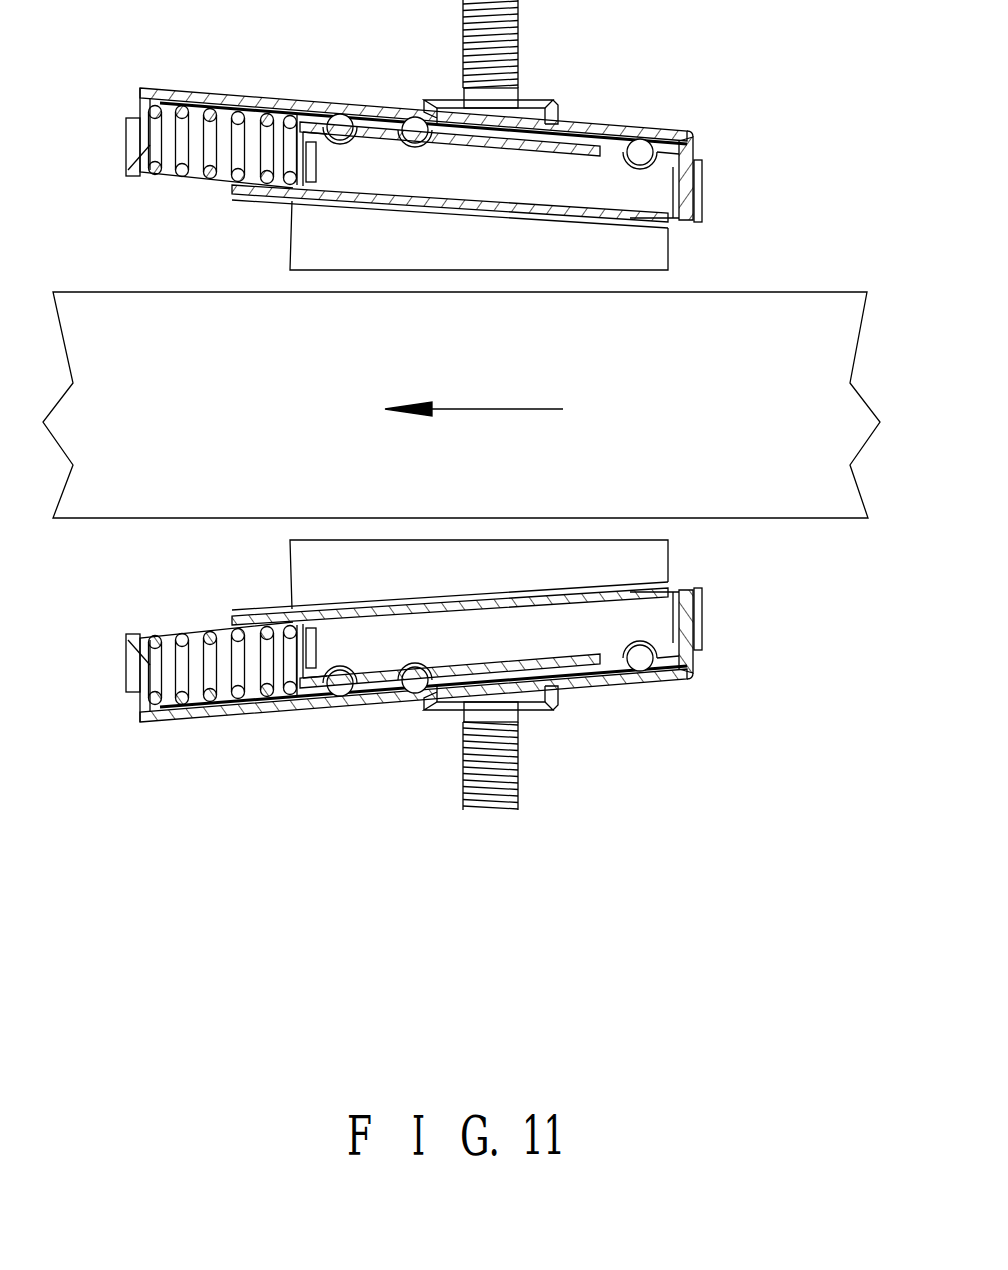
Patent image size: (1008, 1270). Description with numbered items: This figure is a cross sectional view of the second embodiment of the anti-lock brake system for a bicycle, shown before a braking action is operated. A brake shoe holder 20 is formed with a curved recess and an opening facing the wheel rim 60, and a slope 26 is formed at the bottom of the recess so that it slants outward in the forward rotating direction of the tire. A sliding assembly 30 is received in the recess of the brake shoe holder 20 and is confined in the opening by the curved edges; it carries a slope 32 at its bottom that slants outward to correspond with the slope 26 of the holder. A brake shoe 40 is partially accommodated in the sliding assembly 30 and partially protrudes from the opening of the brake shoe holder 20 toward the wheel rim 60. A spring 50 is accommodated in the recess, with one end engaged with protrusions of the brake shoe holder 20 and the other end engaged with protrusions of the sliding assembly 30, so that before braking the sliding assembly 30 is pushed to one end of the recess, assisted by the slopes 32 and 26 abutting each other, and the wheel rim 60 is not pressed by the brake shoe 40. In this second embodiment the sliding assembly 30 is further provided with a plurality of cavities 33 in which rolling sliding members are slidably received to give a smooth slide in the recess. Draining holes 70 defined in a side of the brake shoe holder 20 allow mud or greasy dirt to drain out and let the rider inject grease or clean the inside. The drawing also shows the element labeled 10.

The plate 10 is at (832, 303).
The brake shoe holder 20 is at (397, 110).
The slope 26 is at (583, 132).
The sliding assembly 30 is at (688, 130).
The slope 32 is at (312, 128).
The cavities 33 is at (637, 167).
The brake shoe 40 is at (665, 235).
The spring 50 is at (178, 110).
The wheel rim 60 is at (640, 148).
The draining holes 70 is at (523, 125).